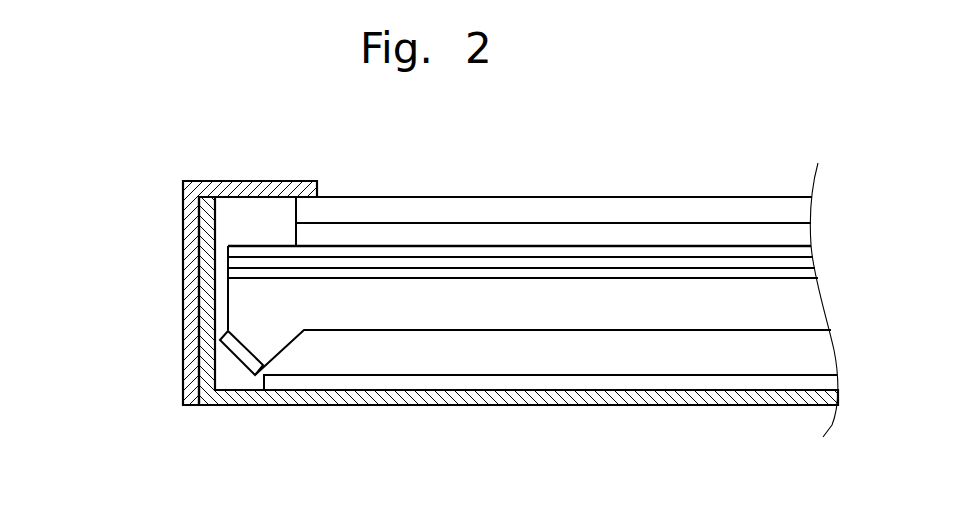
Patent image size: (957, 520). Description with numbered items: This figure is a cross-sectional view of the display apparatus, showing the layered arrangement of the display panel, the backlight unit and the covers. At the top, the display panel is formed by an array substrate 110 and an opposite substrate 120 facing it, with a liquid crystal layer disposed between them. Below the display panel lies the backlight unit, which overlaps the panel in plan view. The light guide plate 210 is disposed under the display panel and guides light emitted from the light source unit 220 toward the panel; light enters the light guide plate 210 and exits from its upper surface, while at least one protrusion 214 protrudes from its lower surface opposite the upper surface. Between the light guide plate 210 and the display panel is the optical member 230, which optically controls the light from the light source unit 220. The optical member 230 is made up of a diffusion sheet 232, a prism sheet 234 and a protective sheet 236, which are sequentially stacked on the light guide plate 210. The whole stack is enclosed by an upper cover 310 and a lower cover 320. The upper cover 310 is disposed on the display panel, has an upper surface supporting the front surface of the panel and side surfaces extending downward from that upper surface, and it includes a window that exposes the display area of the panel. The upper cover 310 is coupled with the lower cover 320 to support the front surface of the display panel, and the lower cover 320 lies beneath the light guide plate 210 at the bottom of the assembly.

The array substrate 110 is at (507, 233).
The opposite substrate 120 is at (414, 212).
The light guide plate 210 is at (445, 310).
The protrusion 214 is at (268, 338).
The light source unit 220 is at (240, 360).
The optical member 230 is at (105, 227).
The diffusion sheet 232 is at (235, 274).
The prism sheet 234 is at (235, 260).
The protective sheet 236 is at (235, 249).
The upper cover 310 is at (190, 337).
The lower cover 320 is at (583, 398).